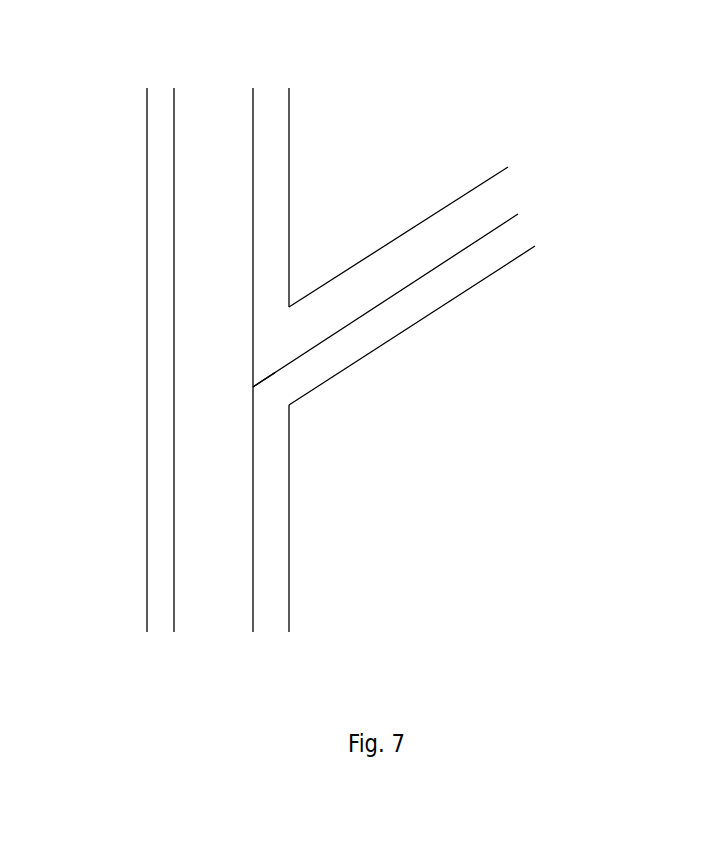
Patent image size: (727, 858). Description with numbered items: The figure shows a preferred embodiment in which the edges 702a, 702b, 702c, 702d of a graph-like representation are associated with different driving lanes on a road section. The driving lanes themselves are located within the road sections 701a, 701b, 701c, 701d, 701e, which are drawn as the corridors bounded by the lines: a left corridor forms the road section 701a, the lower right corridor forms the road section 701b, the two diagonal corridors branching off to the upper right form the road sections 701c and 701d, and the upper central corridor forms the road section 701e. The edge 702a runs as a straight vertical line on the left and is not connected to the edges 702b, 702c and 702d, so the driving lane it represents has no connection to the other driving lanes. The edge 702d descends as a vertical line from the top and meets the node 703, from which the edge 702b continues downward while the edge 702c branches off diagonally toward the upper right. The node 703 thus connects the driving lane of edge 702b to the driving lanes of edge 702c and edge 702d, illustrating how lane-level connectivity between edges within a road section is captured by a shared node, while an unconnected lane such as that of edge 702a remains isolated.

The edge 702a is at (164, 79).
The edge 702d is at (256, 62).
The edge 702b is at (243, 615).
The edge 702c is at (529, 217).
The node 703 is at (235, 373).
The road section 701a is at (123, 450).
The road section 701b is at (316, 459).
The road section 701c is at (395, 357).
The road section 701d is at (383, 225).
The road section 701e is at (318, 144).